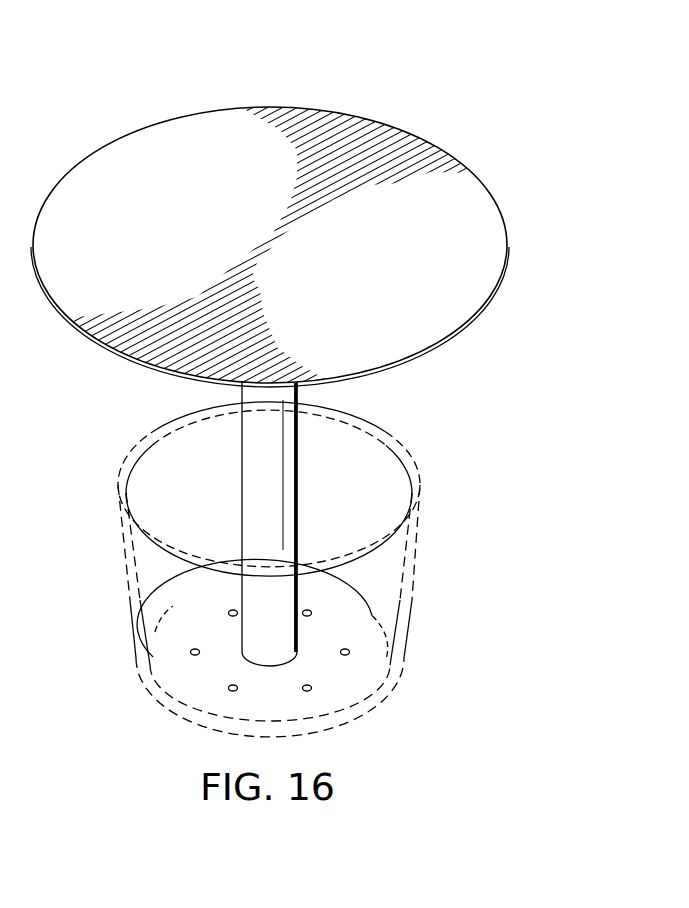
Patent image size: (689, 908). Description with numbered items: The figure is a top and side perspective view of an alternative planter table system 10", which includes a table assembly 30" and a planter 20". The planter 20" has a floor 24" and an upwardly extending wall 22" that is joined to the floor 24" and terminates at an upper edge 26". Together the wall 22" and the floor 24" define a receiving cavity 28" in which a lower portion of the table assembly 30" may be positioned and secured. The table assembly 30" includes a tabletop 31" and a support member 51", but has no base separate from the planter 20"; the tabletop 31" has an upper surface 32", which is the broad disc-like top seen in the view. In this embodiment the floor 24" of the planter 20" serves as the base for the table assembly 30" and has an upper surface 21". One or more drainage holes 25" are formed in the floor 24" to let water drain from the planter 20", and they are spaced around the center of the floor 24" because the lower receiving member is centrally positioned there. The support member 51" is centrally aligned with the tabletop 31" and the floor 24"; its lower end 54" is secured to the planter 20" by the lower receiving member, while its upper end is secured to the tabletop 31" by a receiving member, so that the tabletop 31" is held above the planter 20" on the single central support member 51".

The planter table system 10 is at (473, 77).
The tabletop 31 is at (156, 113).
The upper surface 32 is at (498, 243).
The support member 51 is at (310, 488).
The upper edge 26 is at (402, 447).
The table assembly 30 is at (171, 446).
The receiving cavity 28 is at (210, 504).
The wall 22 is at (418, 530).
The upper surface 21 is at (376, 676).
The planter 20 is at (120, 629).
The floor 24 is at (198, 618).
The lower end 54 is at (297, 642).
The drainage holes 25 is at (190, 655).